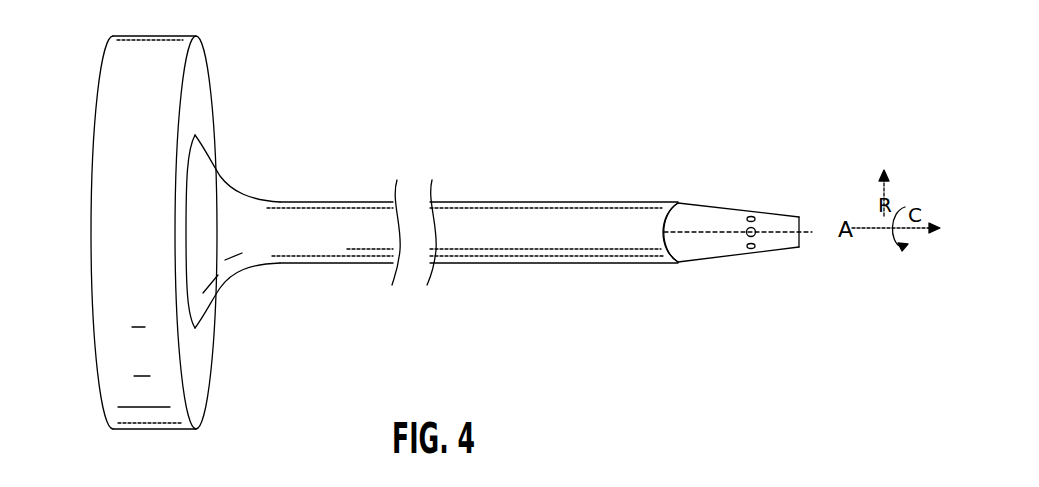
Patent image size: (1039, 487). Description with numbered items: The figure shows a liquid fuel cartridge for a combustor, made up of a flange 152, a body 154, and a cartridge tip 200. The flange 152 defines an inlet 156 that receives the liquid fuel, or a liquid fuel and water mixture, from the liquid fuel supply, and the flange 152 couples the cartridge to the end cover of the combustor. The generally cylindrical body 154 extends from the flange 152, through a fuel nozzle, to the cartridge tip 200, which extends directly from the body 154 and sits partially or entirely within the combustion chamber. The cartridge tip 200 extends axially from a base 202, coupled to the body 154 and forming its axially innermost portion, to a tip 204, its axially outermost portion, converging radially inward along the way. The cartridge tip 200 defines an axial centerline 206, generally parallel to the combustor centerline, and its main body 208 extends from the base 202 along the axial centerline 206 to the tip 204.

The flange 152 is at (204, 65).
The body 154 is at (582, 201).
The inlet 156 is at (92, 247).
The cartridge tip 200 is at (738, 241).
The base 202 is at (668, 262).
The tip 204 is at (800, 247).
The axial centerline 206 is at (800, 232).
The main body 208 is at (714, 243).